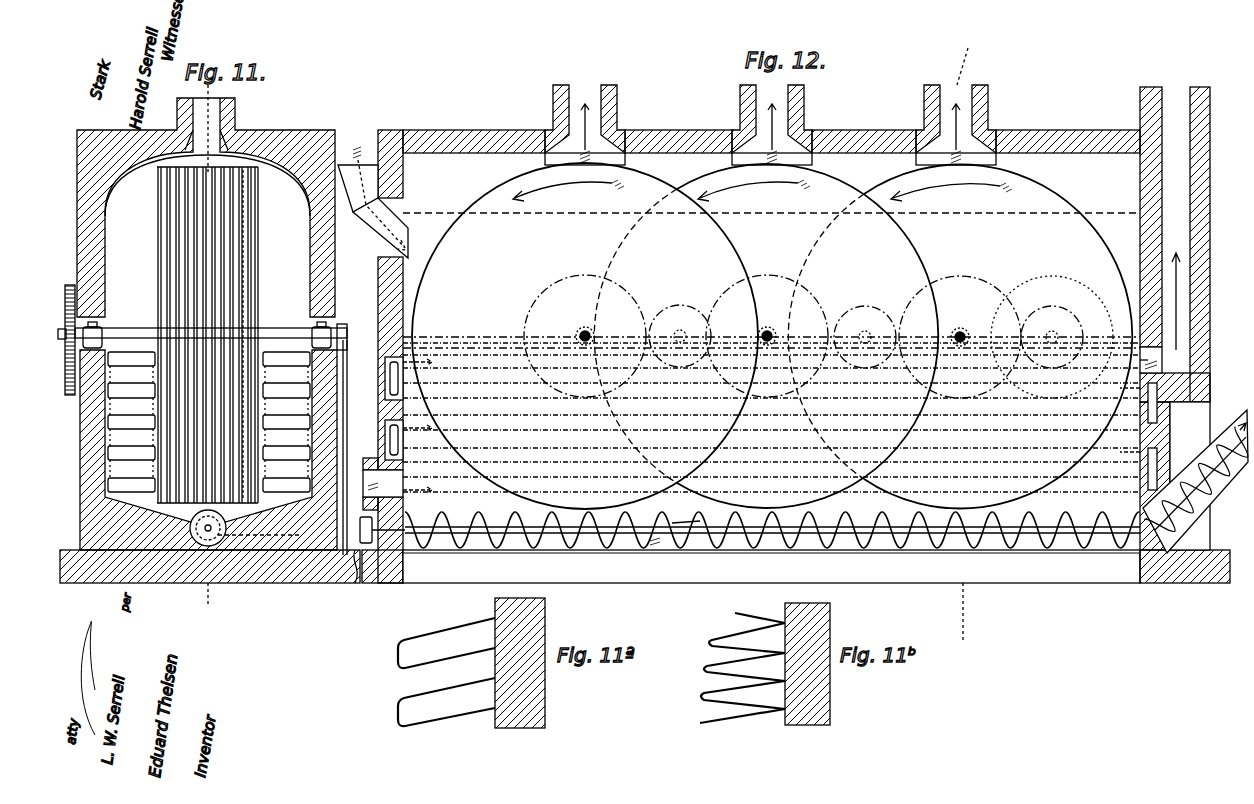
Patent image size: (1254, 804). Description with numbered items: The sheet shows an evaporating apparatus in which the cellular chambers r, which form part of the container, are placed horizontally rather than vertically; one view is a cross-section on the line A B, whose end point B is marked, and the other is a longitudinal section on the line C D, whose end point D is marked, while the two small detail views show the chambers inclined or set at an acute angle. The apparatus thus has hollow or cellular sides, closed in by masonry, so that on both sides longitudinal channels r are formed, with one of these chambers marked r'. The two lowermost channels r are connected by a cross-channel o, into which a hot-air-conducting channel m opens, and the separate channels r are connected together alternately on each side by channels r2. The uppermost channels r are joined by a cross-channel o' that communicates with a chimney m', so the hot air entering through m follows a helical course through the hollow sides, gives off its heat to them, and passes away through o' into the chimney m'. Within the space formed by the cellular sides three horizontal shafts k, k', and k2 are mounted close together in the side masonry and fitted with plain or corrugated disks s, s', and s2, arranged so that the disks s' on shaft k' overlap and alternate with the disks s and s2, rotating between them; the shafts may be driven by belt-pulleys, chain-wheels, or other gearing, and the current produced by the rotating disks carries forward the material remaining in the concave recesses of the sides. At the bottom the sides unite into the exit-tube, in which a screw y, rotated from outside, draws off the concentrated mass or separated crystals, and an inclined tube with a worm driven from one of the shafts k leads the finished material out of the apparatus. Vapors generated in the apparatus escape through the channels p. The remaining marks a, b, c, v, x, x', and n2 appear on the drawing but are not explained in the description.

In FIG. 12, the drying chamber a is at (964, 57).
In FIG. 11, the inlet opening b is at (202, 130).
In FIG. 11, the inlet neck c is at (205, 116).
In FIG. 11, the section line C D is at (215, 599).
In FIG. 12, the section line A B is at (971, 614).
In FIG. 12, the feed chute v is at (373, 202).
In FIG. 11, the rotating shaft k is at (211, 325).
In FIG. 12, the rotating shaft k is at (960, 337).
In FIG. 12, the second rotating shaft k' is at (766, 336).
In FIG. 12, the third rotating shaft k2 is at (585, 336).
In FIG. 11, the disks s is at (203, 340).
In FIG. 12, the disks s is at (951, 194).
In FIG. 11, the disks on second shaft s' is at (206, 335).
In FIG. 12, the disks on second shaft s' is at (754, 190).
In FIG. 12, the disks on third shaft s2 is at (568, 190).
In FIG. 11, the longitudinal channels r is at (209, 421).
In FIG. 12, the longitudinal channels r is at (771, 420).
In FIG. 11A, the longitudinal channels r is at (471, 663).
In FIG. 11B, the longitudinal channels r is at (765, 664).
In FIG. 11, the trough r' is at (286, 453).
In FIG. 12, the connecting channels r2 is at (385, 386).
In FIG. 12, the hot-air-conducting channel m is at (369, 484).
In FIG. 12, the chimney m' is at (1175, 244).
In FIG. 12, the cross-channel o is at (397, 484).
In FIG. 12, the upper cross-channel o' is at (1151, 360).
In FIG. 12, the vapor channels p is at (770, 125).
In FIG. 11, the screw conveyor x is at (192, 528).
In FIG. 12, the screw conveyor x is at (750, 542).
In FIG. 12, the inclined discharge screw x' is at (1198, 481).
In FIG. 11, the screw y is at (200, 540).
In FIG. 12, the screw y is at (686, 509).
In FIG. 12, the discharge casing n2 is at (1160, 405).